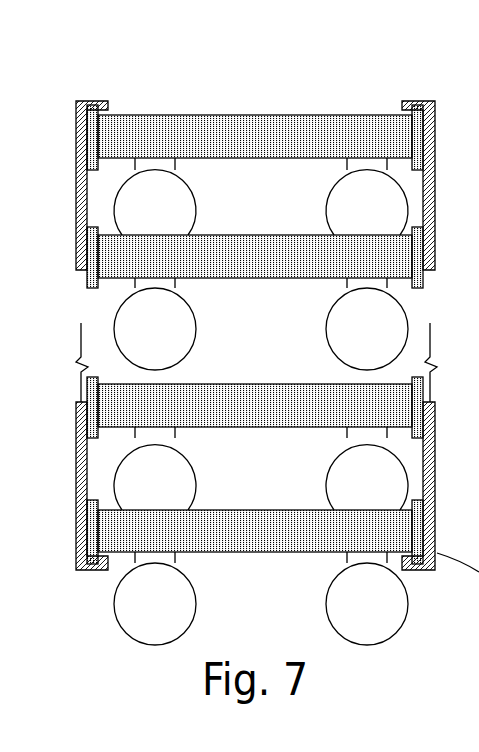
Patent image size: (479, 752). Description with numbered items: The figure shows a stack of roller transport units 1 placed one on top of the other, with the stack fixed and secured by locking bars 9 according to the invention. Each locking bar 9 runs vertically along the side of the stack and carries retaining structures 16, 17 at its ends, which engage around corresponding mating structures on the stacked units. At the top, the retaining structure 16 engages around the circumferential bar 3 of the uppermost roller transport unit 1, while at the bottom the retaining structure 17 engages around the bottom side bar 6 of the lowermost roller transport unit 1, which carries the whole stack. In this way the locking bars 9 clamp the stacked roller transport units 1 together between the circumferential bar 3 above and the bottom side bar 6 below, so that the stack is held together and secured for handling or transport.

The roller transport unit 1 is at (266, 112).
The circumferential bar 3 is at (85, 100).
The bottom side bar 6 is at (77, 557).
The locking bar 9 is at (63, 246).
The retaining structure 16 is at (93, 102).
The retaining structure 17 is at (104, 572).